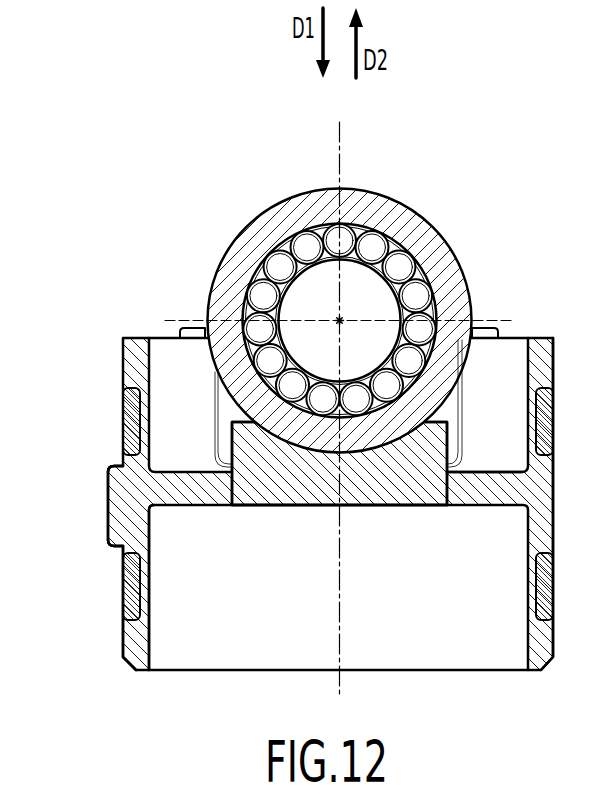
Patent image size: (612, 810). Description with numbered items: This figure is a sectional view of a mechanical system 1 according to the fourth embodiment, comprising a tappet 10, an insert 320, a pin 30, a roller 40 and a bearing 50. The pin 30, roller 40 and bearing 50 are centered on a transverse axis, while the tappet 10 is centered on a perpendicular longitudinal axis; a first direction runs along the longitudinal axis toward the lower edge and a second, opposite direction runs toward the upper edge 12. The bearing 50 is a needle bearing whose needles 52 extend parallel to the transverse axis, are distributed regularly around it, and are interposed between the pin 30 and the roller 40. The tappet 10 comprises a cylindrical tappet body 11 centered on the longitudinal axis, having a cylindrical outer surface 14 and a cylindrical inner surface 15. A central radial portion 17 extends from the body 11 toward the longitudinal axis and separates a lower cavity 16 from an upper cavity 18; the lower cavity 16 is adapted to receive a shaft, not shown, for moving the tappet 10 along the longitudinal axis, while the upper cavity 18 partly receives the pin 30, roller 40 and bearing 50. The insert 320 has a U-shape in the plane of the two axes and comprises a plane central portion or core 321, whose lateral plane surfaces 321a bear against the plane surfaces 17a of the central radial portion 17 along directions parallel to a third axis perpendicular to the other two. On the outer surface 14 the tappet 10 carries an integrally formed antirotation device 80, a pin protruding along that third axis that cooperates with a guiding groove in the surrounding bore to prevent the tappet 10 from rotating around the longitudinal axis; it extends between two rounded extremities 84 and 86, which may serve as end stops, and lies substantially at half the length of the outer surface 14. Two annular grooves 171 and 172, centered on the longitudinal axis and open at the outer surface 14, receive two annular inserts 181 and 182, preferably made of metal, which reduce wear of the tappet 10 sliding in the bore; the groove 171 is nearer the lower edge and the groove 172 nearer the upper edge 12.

The mechanical system 1 is at (186, 216).
The tappet 10 is at (162, 708).
The tappet body 11 is at (543, 652).
The upper edge 12 is at (136, 331).
The outer surface 14 is at (123, 635).
The inner surface 15 is at (152, 647).
The lower cavity 16 is at (275, 614).
The central radial portion 17 is at (492, 497).
The plane surfaces 17a is at (445, 490).
The upper cavity 18 is at (498, 394).
The pin 30 is at (308, 297).
The roller 40 is at (310, 200).
The bearing 50 is at (376, 237).
The needles 52 is at (430, 280).
The antirotation device 80 is at (118, 500).
The extremity 84 is at (113, 461).
The extremity 86 is at (113, 547).
The annular groove 171 is at (545, 597).
The annular groove 172 is at (548, 428).
The annular insert 181 is at (128, 599).
The annular insert 182 is at (128, 407).
The insert 320 is at (358, 537).
The central portion 321 is at (300, 500).
The lateral plane surfaces 321a is at (232, 489).